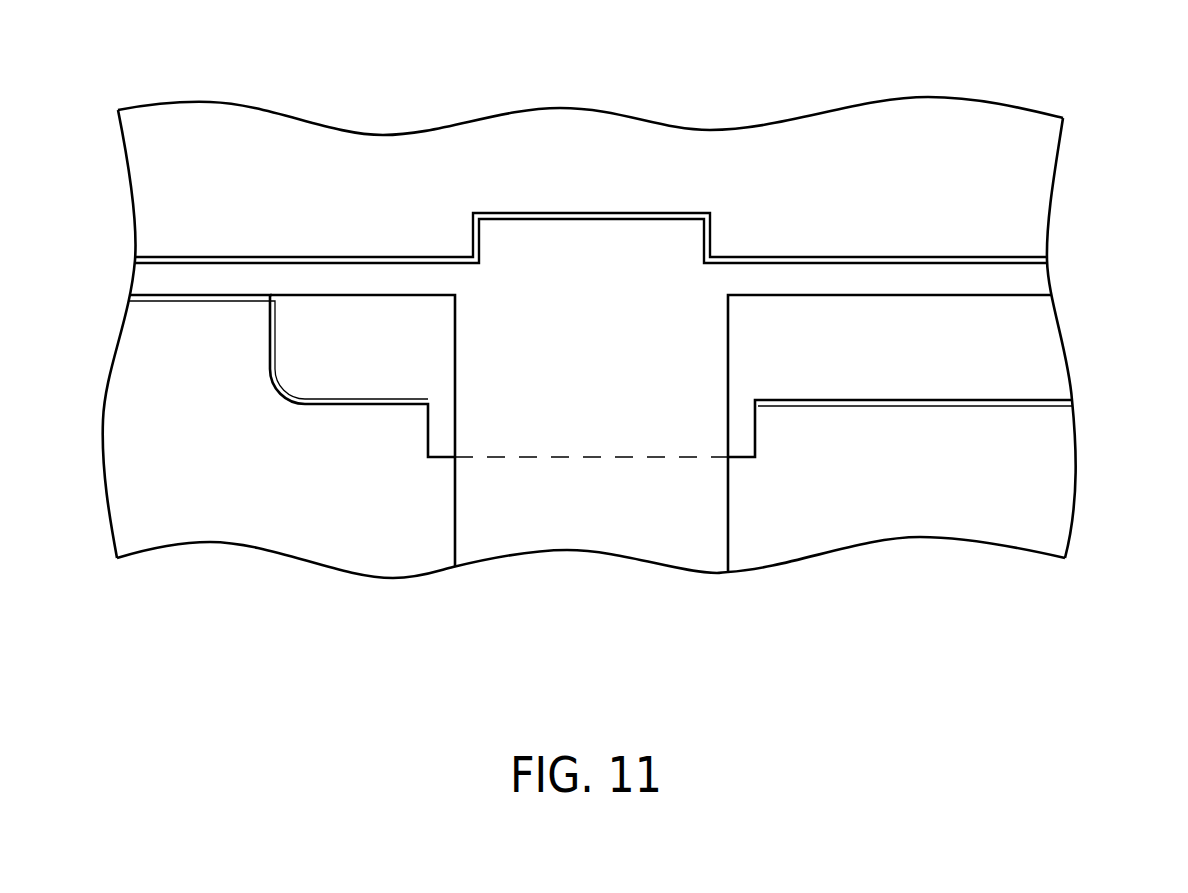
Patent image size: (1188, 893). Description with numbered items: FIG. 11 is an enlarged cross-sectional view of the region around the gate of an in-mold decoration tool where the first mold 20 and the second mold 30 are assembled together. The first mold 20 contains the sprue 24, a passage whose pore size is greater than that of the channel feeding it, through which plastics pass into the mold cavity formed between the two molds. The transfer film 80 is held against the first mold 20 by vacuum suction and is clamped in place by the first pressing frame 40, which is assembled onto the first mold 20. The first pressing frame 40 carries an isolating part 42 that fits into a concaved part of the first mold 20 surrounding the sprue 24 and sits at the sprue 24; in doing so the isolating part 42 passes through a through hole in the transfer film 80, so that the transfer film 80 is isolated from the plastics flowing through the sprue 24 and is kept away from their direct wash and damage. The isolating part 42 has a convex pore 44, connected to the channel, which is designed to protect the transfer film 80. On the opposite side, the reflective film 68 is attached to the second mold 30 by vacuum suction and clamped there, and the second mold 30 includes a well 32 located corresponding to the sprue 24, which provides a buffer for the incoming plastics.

The first mold 20 is at (1028, 470).
The sprue 24 is at (630, 500).
The second mold 30 is at (1018, 176).
The well 32 is at (528, 247).
The first pressing frame 40 is at (1023, 343).
The isolating part 42 is at (438, 428).
The convex pore 44 is at (639, 427).
The reflective film 68 is at (183, 258).
The transfer film 80 is at (283, 398).